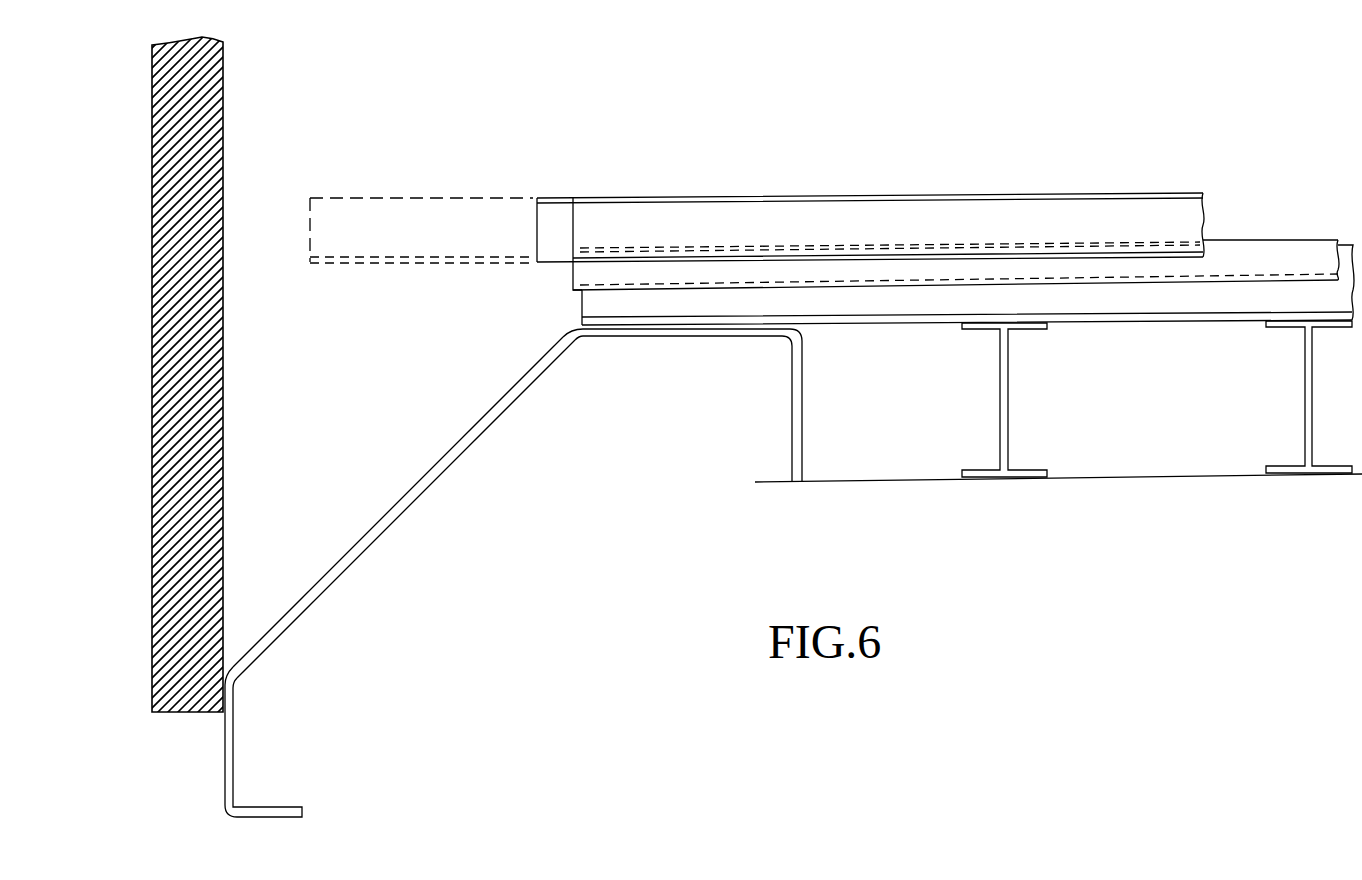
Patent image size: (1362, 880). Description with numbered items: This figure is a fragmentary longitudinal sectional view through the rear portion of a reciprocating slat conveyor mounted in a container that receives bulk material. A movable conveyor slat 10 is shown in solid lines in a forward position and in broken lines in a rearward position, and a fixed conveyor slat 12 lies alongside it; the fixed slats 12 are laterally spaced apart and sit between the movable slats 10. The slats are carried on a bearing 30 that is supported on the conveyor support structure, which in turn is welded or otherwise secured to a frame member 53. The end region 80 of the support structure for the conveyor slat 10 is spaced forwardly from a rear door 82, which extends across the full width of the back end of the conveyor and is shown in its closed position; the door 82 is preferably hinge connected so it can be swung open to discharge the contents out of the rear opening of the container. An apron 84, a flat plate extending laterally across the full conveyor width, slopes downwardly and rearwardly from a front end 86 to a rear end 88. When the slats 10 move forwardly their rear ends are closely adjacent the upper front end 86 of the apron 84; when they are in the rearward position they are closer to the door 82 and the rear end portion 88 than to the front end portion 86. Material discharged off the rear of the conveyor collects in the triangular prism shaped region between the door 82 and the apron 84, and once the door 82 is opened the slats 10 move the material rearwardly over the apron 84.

The movable conveyor slat 10 is at (494, 215).
The fixed conveyor slat 12 is at (1302, 290).
The bearing 30 is at (571, 273).
The frame member 53 is at (1007, 400).
The end region of support structure 80 is at (513, 573).
The rear door 82 is at (226, 414).
The apron 84 is at (409, 509).
The front end of apron 86 is at (575, 340).
The rear end of apron 88 is at (240, 684).